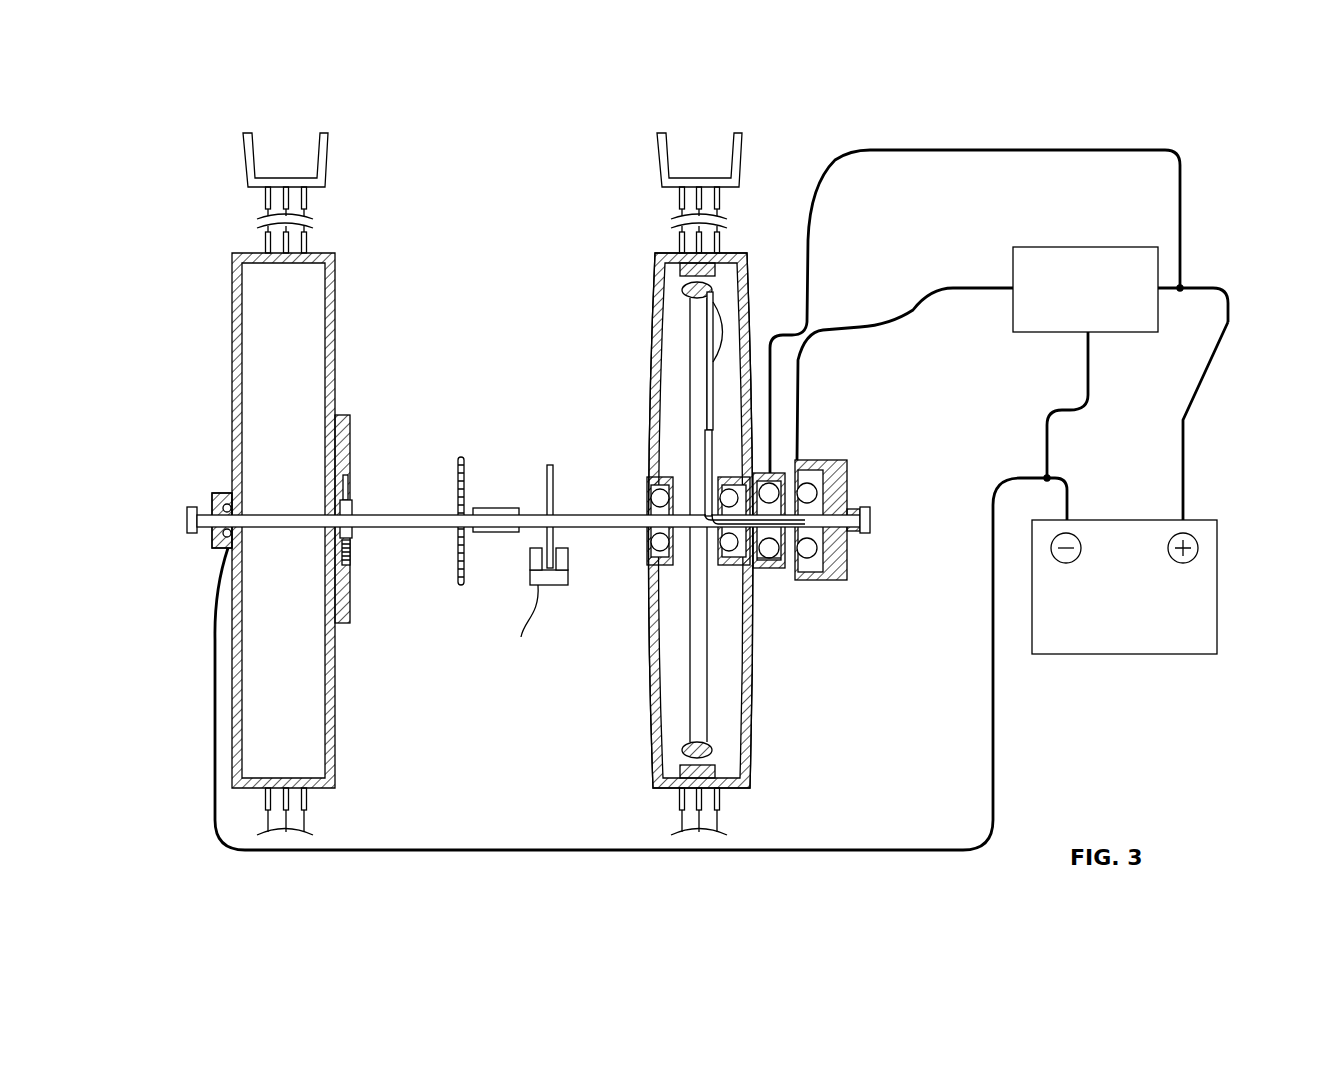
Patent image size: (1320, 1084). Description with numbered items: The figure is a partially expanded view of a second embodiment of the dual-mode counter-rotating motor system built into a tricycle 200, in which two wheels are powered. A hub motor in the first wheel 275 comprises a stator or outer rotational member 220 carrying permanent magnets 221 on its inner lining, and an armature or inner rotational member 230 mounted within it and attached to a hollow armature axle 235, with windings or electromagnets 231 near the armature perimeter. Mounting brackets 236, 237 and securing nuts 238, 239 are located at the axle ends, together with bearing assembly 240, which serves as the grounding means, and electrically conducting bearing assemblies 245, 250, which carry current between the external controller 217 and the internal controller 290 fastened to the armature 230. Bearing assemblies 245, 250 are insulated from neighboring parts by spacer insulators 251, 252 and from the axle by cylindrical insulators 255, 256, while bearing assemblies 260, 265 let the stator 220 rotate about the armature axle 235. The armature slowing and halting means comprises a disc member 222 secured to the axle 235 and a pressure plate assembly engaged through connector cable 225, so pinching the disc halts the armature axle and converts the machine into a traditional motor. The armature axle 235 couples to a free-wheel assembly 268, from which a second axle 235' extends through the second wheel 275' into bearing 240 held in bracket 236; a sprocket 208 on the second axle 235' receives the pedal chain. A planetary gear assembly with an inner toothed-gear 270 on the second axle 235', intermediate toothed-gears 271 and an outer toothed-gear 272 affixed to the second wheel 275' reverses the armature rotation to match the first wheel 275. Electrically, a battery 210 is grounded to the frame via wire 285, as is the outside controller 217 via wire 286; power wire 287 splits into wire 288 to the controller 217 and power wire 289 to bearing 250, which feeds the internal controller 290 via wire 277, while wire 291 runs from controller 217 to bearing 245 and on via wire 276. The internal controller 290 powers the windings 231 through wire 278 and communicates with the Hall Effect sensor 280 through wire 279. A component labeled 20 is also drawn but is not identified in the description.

The tricycle 200 is at (205, 137).
The sensor bracket 20 is at (530, 564).
The sprocket 208 is at (464, 458).
The battery 210 is at (1068, 655).
The external speed-on/off controller 217 is at (1068, 247).
The stator 220 is at (656, 341).
The permanent magnets 221 is at (690, 266).
The disc member 222 is at (550, 466).
The connector cable 225 is at (524, 631).
The armature 230 is at (690, 382).
The windings 231 is at (686, 288).
The hollow armature axle 235 is at (667, 520).
The second axle 235' is at (283, 520).
The axle-to-bike mounting bracket 236 is at (226, 493).
The axle-to-bike mounting bracket 237 is at (853, 511).
The securing nut 238 is at (192, 537).
The securing nut 239 is at (872, 521).
The bearing assembly 240 is at (227, 548).
The bearing assembly 245 is at (810, 556).
The bearing assembly 250 is at (772, 556).
The spacer insulator 251 is at (770, 470).
The spacer insulator 252 is at (798, 468).
The axle surrounding insulator 255 is at (766, 565).
The axle surrounding insulator 256 is at (832, 470).
The bearing assembly 260 is at (655, 498).
The bearing assembly 265 is at (722, 490).
The free-wheel assembly 268 is at (480, 507).
The inner toothed-gear 270 is at (350, 490).
The intermediate toothed-gear 271 is at (350, 555).
The outer toothed-gear 272 is at (350, 610).
The first wheel 275 is at (699, 488).
The second wheel 275' is at (326, 484).
The wire 276 is at (703, 432).
The wire 277 is at (706, 462).
The wire 278 is at (718, 300).
The wire 279 is at (714, 333).
The Hall Effect sensor 280 is at (709, 294).
The wire 285 is at (1068, 505).
The wire 286 is at (1090, 376).
The power wire 287 is at (1229, 328).
The wire 288 is at (1172, 286).
The power wire 289 is at (950, 152).
The internal controller 290 is at (748, 395).
The wire 291 is at (918, 316).